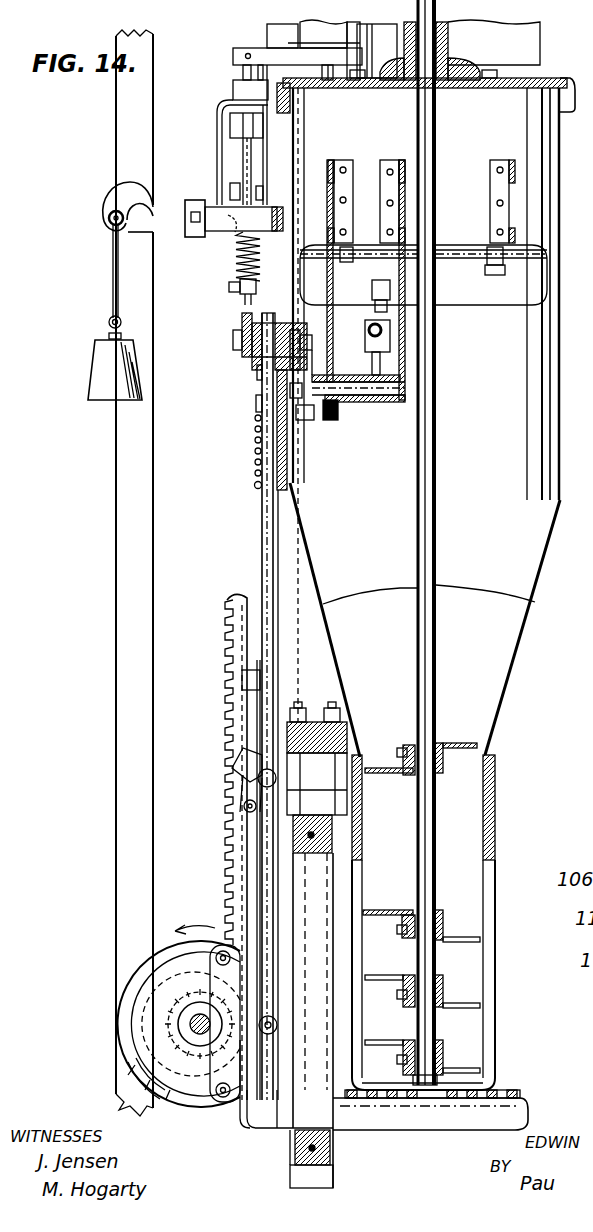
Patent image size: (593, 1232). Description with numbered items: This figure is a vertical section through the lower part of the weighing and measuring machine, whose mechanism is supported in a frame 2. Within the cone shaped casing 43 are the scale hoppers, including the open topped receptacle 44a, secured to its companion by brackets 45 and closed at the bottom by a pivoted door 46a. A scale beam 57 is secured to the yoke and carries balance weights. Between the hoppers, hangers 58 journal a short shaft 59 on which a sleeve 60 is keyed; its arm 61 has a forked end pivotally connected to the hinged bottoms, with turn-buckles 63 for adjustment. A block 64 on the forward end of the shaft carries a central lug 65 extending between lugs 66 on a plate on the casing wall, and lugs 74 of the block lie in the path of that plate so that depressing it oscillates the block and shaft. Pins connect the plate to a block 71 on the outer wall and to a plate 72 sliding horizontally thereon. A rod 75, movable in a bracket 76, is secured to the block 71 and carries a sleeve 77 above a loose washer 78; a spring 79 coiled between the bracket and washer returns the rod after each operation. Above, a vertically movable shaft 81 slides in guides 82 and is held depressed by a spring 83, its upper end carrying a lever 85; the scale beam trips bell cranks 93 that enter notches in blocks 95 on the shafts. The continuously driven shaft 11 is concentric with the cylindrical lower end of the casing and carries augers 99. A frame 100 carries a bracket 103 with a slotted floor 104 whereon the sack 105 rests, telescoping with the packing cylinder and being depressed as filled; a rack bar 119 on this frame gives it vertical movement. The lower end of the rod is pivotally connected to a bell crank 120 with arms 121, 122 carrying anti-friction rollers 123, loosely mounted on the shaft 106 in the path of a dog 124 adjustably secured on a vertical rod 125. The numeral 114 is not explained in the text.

The frame 2 is at (125, 575).
The shaft 11 is at (437, 460).
The cone shaped casing 43 is at (557, 394).
The open topped receptacle 44a is at (481, 119).
The brackets 45 is at (337, 162).
The pivoted door 46a is at (498, 297).
The scale beam 57 is at (222, 232).
The hangers 58 is at (332, 340).
The short shaft 59 is at (362, 395).
The sleeve 60 is at (372, 402).
The arm 61 is at (375, 356).
The turn-buckles 63 is at (376, 292).
The block 64 is at (312, 420).
The lug 65 is at (316, 340).
The lugs 66 is at (300, 393).
The block 71 is at (256, 360).
The plate 72 is at (242, 323).
The lugs 74 is at (278, 420).
The rod 75 is at (268, 525).
The bracket 76 is at (258, 486).
The sleeve 77 is at (260, 372).
The loose washer 78 is at (262, 405).
The spring 79 is at (258, 462).
The vertically movable shaft 81 is at (246, 154).
The guides 82 is at (238, 88).
The springs 83 is at (238, 262).
The lever 85 is at (233, 56).
The bell cranks 93 is at (232, 186).
The blocks 95 is at (240, 128).
The augers 99 is at (438, 922).
The frame 100 is at (297, 945).
The bracket 103 is at (442, 1115).
The slotted floor 104 is at (492, 1090).
The sack 105 is at (497, 993).
The shaft 106 is at (180, 1024).
The lever 114 is at (579, 840).
The rack bar 119 is at (240, 625).
The bell crank 120 is at (255, 1021).
The arm 121 is at (195, 1018).
The arm 122 is at (163, 1078).
The anti-friction rollers 123 is at (225, 1100).
The dog 124 is at (230, 764).
The vertical rod 125 is at (266, 1105).